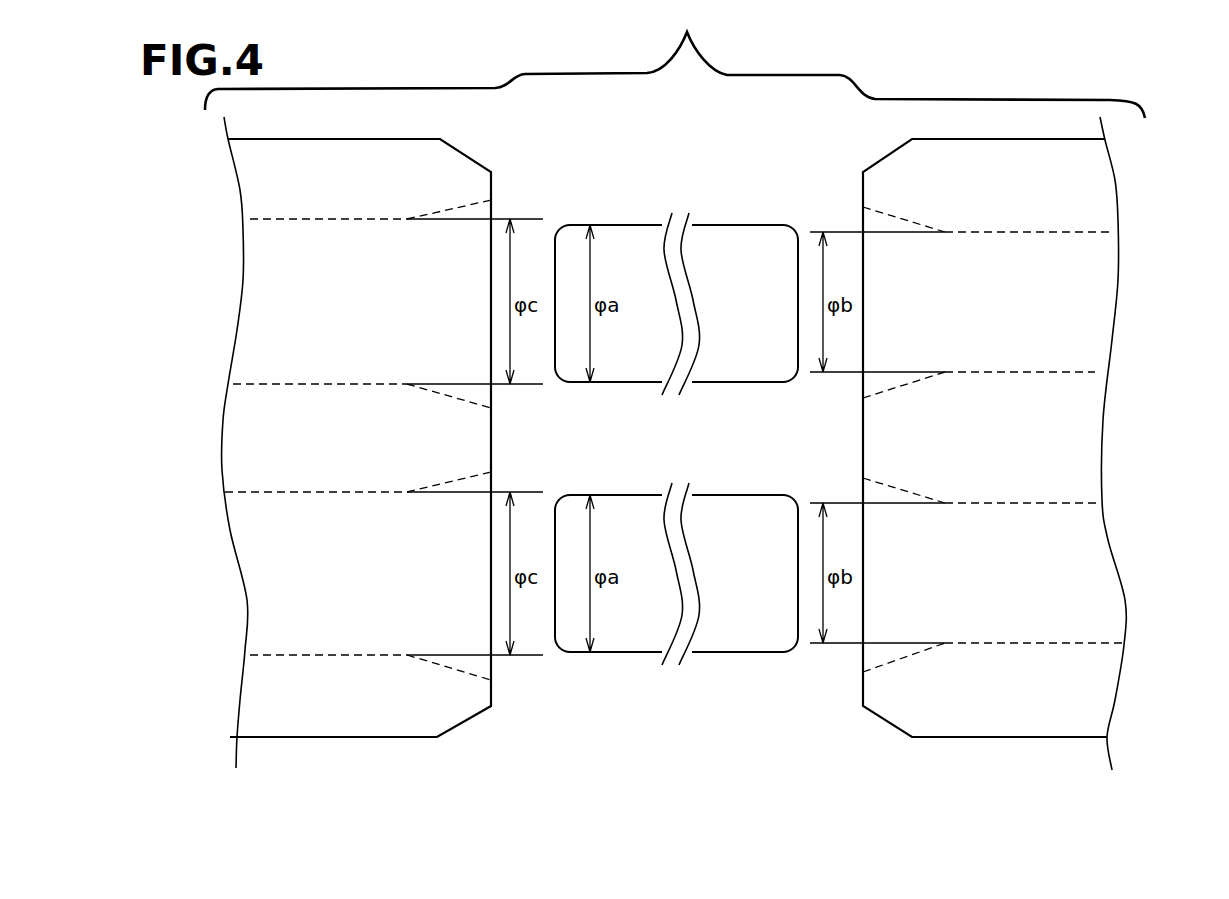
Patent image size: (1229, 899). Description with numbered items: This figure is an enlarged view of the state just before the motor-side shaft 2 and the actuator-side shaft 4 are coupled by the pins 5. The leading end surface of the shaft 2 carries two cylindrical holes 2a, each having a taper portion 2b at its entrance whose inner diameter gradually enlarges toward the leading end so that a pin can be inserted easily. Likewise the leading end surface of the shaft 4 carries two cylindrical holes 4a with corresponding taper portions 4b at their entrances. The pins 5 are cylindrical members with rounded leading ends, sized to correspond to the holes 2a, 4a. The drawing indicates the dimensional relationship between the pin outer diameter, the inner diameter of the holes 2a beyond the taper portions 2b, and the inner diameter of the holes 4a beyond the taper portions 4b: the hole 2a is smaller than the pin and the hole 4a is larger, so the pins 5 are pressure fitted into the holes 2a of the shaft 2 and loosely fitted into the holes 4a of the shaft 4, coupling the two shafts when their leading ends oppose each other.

The shaft 2 is at (1012, 737).
The holes 2a is at (1067, 232).
The taper portions 2b is at (862, 218).
The shaft 4 is at (340, 738).
The holes 4a is at (297, 382).
The taper portions 4b is at (493, 207).
The pins 5 is at (740, 652).